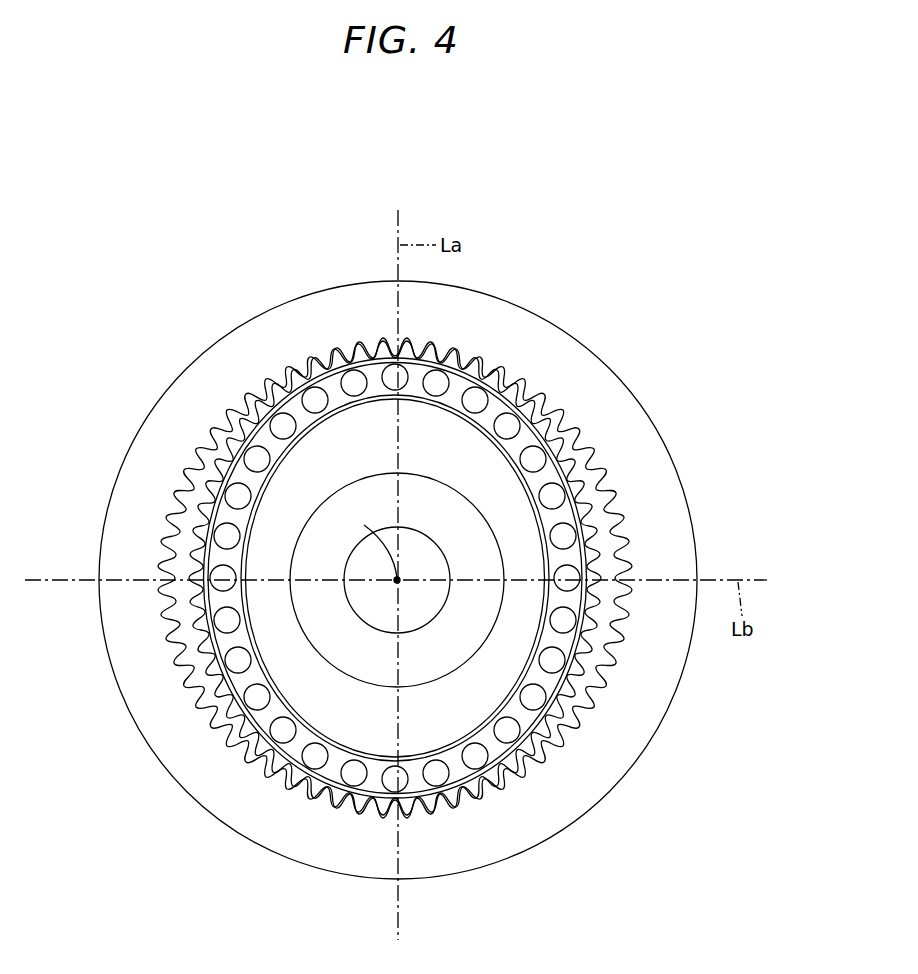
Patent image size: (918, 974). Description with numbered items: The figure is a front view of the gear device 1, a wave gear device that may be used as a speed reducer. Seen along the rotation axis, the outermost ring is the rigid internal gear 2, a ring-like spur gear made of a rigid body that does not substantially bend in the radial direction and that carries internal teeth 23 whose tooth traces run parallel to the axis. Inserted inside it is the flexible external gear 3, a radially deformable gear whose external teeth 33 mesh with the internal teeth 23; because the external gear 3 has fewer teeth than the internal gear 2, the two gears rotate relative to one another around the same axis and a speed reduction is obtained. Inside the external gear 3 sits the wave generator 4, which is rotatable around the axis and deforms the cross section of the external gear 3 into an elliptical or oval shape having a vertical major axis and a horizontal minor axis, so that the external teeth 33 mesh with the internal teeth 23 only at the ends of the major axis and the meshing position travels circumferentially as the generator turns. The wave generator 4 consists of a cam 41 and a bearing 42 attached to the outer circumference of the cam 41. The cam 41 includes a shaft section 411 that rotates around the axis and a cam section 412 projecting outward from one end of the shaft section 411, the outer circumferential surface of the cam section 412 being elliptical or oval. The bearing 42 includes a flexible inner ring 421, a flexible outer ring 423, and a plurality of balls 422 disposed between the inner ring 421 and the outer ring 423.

The gear device 1 is at (606, 161).
The rigid internal gear 2 is at (414, 571).
The internal teeth 23 is at (618, 653).
The flexible external gear 3 is at (456, 578).
The external teeth 33 is at (597, 681).
The wave generator 4 is at (323, 643).
The cam 41 is at (266, 629).
The shaft section 411 is at (310, 673).
The cam section 412 is at (320, 702).
The bearing 42 is at (411, 643).
The inner ring 421 is at (518, 775).
The balls 422 is at (472, 768).
The outer ring 423 is at (395, 654).